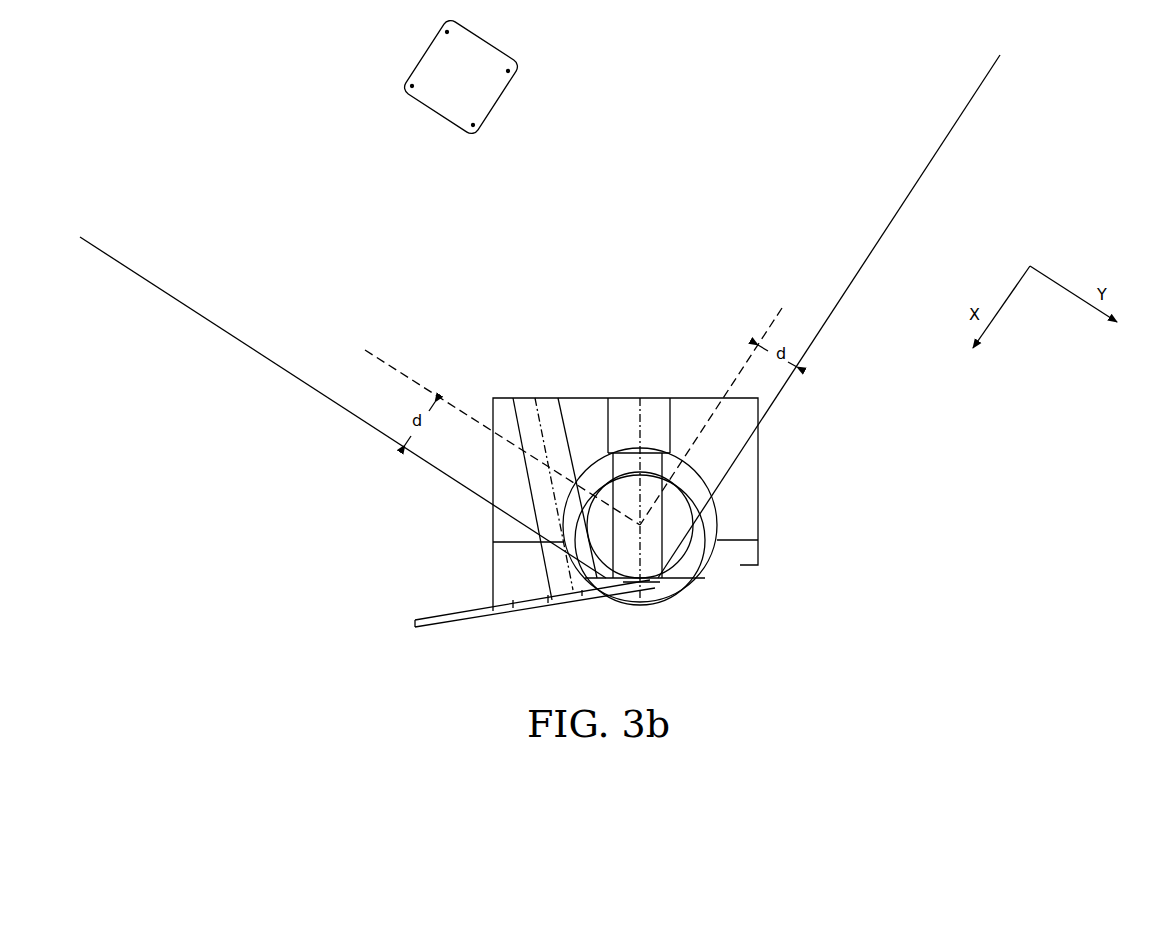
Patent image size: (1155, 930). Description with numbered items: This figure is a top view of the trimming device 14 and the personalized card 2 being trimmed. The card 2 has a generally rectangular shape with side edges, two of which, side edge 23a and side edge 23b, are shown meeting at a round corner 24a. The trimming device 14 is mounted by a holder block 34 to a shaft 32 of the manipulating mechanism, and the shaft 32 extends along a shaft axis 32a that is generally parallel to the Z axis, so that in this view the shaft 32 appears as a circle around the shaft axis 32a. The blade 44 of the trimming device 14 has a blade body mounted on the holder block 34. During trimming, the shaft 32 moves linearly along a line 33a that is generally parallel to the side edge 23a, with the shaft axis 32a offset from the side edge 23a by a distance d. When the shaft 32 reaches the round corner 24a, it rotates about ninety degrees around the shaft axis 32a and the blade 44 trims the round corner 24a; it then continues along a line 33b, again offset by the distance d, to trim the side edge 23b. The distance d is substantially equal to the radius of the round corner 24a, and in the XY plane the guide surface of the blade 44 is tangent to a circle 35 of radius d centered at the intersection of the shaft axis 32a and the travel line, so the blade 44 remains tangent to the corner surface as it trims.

The card 2 is at (554, 137).
The trimming device 14 is at (442, 623).
The side edge 23a is at (373, 425).
The side edge 23b is at (812, 345).
The round corner 24a is at (680, 558).
The shaft 32 is at (718, 537).
The shaft axis 32a is at (645, 482).
The line 33a is at (462, 388).
The line 33b is at (770, 328).
The holder block 34 is at (762, 452).
The circle 35 is at (675, 483).
The blade 44 is at (525, 610).